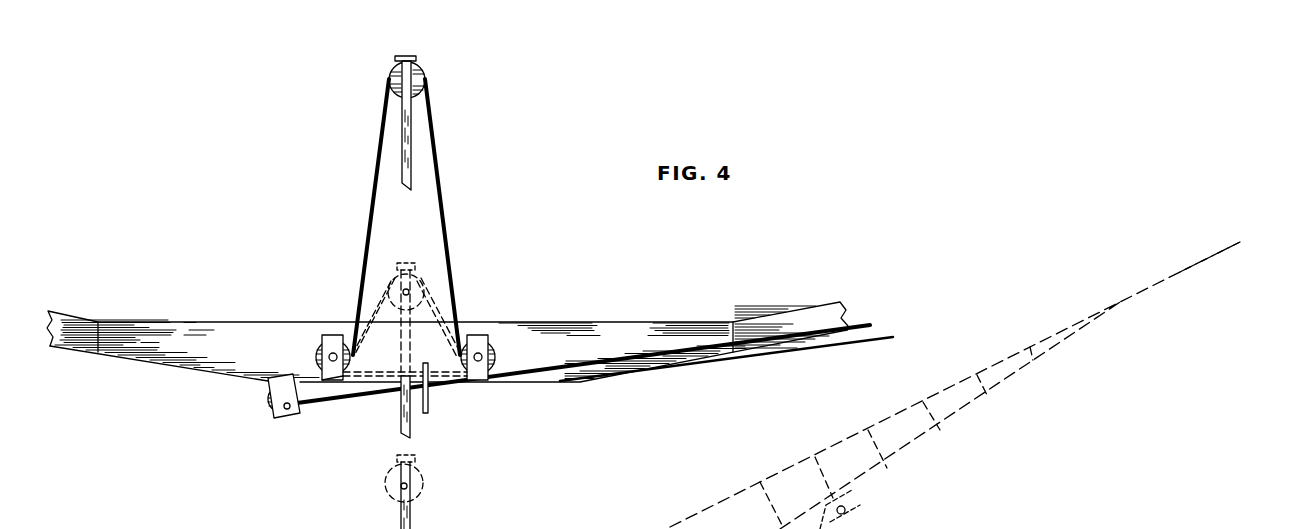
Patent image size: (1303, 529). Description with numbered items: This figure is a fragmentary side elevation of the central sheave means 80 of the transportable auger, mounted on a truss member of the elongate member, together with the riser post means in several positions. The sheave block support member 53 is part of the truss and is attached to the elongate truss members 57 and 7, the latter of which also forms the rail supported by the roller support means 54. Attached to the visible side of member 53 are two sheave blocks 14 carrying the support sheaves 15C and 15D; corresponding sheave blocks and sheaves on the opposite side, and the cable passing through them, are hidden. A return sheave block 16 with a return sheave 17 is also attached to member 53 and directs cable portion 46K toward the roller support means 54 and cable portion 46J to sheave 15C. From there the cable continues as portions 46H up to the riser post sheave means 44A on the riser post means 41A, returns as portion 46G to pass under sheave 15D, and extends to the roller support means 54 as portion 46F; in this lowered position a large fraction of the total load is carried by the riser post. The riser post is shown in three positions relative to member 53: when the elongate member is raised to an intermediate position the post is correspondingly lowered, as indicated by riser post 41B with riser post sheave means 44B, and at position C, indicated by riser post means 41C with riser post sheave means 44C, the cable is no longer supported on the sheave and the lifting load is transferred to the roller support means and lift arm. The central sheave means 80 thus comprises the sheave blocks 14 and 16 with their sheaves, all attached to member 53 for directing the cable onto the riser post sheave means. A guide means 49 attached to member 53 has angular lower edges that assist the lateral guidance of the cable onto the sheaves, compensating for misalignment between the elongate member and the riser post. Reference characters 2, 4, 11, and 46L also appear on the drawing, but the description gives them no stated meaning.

The boom 2 is at (690, 517).
The boom tip 4 is at (1180, 272).
The elongate truss member 7 is at (765, 330).
The aircraft 11 is at (597, 522).
The sheave block 14 is at (335, 340).
The support sheave 15C is at (318, 367).
The support sheave 15D is at (500, 355).
The return sheave block 16 is at (283, 411).
The return sheave 17 is at (268, 410).
The riser post means 41A is at (411, 136).
The riser post 41B is at (401, 418).
The riser post means 41C is at (418, 528).
The riser post sheave means 44A is at (424, 76).
The riser post sheave means 44B is at (423, 293).
The riser post sheave means 44C is at (425, 484).
The cable portion 46F is at (597, 375).
The cable portion 46G is at (428, 283).
The cable portions 46H is at (391, 282).
The cable portion 46J is at (318, 377).
The cable portion 46K is at (305, 410).
The cable 46L is at (362, 377).
The guide means 49 is at (430, 402).
The sheave block support member 53 is at (127, 337).
The roller support means 54 is at (852, 499).
The elongate truss member 57 is at (80, 335).
The central sheave means 80 is at (220, 458).
The position C is at (1269, 241).